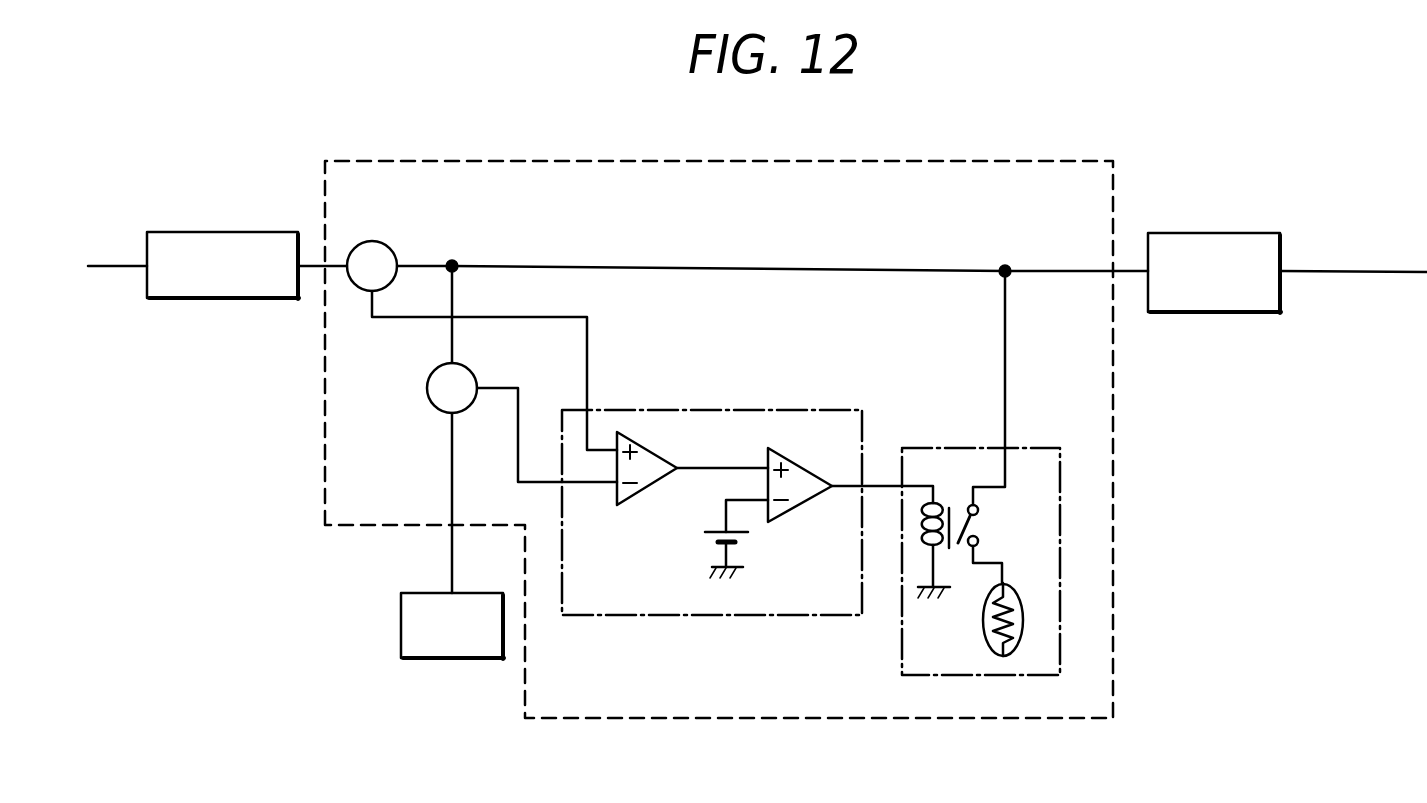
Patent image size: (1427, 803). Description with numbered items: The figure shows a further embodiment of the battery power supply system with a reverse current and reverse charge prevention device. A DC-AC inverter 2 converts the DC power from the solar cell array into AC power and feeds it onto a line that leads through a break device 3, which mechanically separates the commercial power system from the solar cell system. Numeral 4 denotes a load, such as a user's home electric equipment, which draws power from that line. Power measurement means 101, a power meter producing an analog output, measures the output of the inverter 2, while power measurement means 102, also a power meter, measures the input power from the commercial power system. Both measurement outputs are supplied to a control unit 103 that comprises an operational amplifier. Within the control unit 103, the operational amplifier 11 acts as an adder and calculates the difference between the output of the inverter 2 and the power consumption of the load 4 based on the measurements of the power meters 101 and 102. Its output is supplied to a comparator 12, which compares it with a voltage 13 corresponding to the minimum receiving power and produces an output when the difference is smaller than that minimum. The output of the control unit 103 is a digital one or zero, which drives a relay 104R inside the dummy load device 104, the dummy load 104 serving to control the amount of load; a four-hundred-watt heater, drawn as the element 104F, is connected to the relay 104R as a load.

The DC-AC inverter 2 is at (259, 299).
The break device 3 is at (1273, 313).
The load 4 is at (401, 608).
The operational amplifier 11 is at (655, 490).
The comparator 12 is at (812, 434).
The voltage 13 is at (740, 538).
The power measurement means 101 is at (385, 243).
The power measurement means 102 is at (427, 395).
The control unit 103 is at (773, 410).
The dummy load 104 is at (900, 653).
The relay 104R is at (978, 526).
The fuse/heater 104F is at (1023, 620).